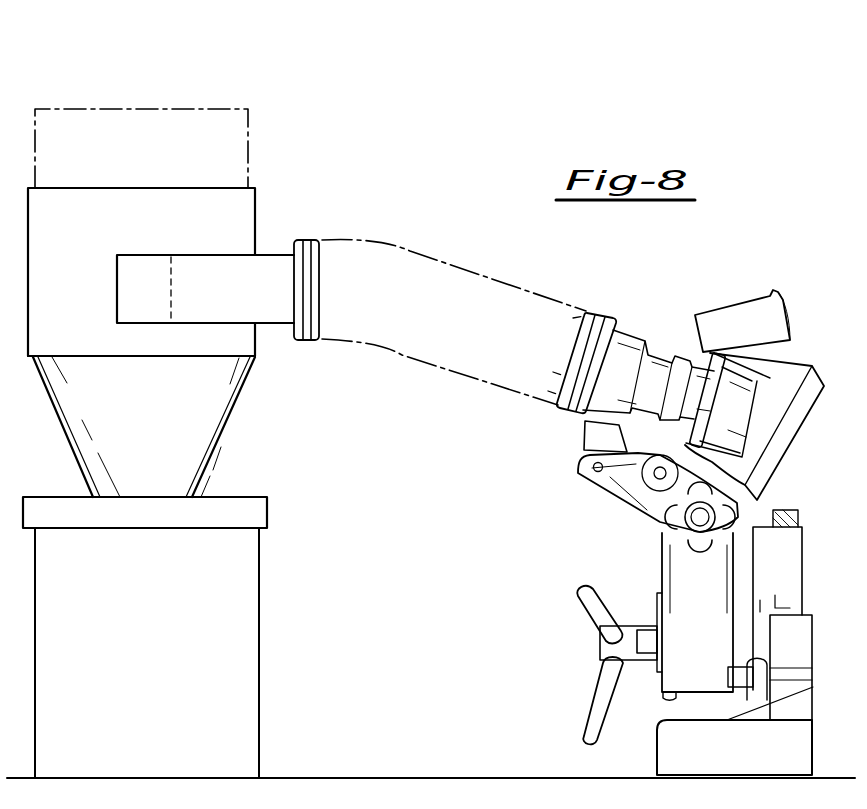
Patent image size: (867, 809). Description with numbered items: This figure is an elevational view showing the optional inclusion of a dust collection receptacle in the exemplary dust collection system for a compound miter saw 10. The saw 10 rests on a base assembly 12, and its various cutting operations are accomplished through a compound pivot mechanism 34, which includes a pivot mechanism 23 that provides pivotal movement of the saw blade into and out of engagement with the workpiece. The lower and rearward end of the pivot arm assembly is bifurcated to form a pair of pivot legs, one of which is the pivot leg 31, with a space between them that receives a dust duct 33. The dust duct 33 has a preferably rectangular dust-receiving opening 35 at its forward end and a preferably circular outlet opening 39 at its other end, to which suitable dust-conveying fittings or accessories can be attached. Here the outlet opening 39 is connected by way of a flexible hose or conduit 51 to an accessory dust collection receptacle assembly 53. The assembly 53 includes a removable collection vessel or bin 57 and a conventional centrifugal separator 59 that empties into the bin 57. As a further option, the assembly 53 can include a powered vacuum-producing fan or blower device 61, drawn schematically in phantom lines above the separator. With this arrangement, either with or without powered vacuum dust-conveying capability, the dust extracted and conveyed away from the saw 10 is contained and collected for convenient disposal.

The compound miter saw 10 is at (625, 572).
The base assembly 12 is at (652, 756).
The pivot mechanism 23 is at (700, 517).
The pivot leg 31 is at (692, 450).
The dust duct 33 is at (778, 398).
The compound pivot mechanism 34 is at (618, 503).
The dust-receiving opening 35 is at (800, 415).
The outlet opening 39 is at (624, 318).
The flexible hose 51 is at (540, 282).
The dust collection receptacle assembly 53 is at (220, 466).
The collection bin 57 is at (238, 627).
The centrifugal separator 59 is at (243, 226).
The vacuum-producing fan or blower device 61 is at (173, 143).